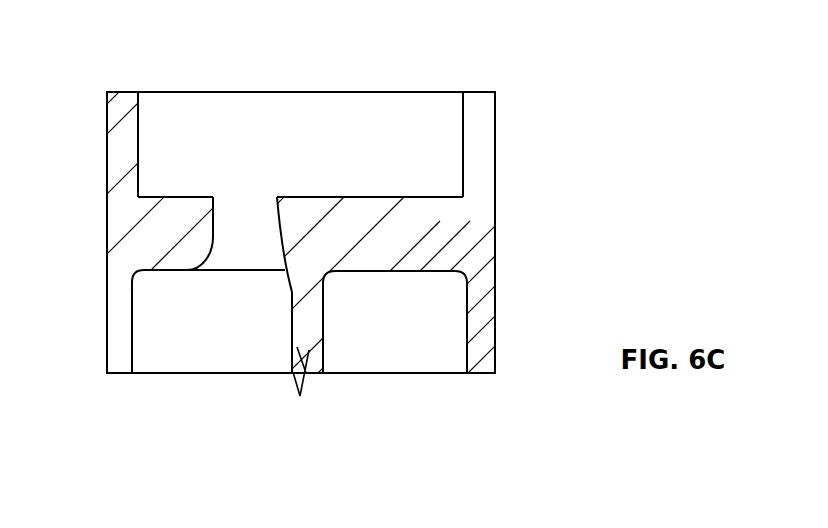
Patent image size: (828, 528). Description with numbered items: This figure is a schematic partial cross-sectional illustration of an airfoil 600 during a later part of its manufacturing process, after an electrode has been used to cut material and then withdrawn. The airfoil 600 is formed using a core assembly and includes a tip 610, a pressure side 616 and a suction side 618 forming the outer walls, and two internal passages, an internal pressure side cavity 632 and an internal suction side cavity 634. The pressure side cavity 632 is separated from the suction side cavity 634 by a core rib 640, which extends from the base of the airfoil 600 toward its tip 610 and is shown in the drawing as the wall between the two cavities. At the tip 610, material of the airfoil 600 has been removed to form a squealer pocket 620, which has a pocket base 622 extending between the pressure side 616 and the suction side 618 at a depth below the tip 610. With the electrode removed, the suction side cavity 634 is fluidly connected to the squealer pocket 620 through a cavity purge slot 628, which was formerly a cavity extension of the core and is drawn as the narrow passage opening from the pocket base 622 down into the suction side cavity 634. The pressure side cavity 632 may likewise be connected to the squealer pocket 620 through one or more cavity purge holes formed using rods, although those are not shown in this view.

The airfoil 600 is at (130, 53).
The tip 610 is at (477, 92).
The pressure side 616 is at (495, 323).
The suction side 618 is at (107, 276).
The squealer pocket 620 is at (283, 114).
The pocket base 622 is at (370, 197).
The cavity purge slot 628 is at (238, 240).
The internal pressure side cavity 632 is at (373, 337).
The internal suction side cavity 634 is at (190, 337).
The core rib 640 is at (307, 350).